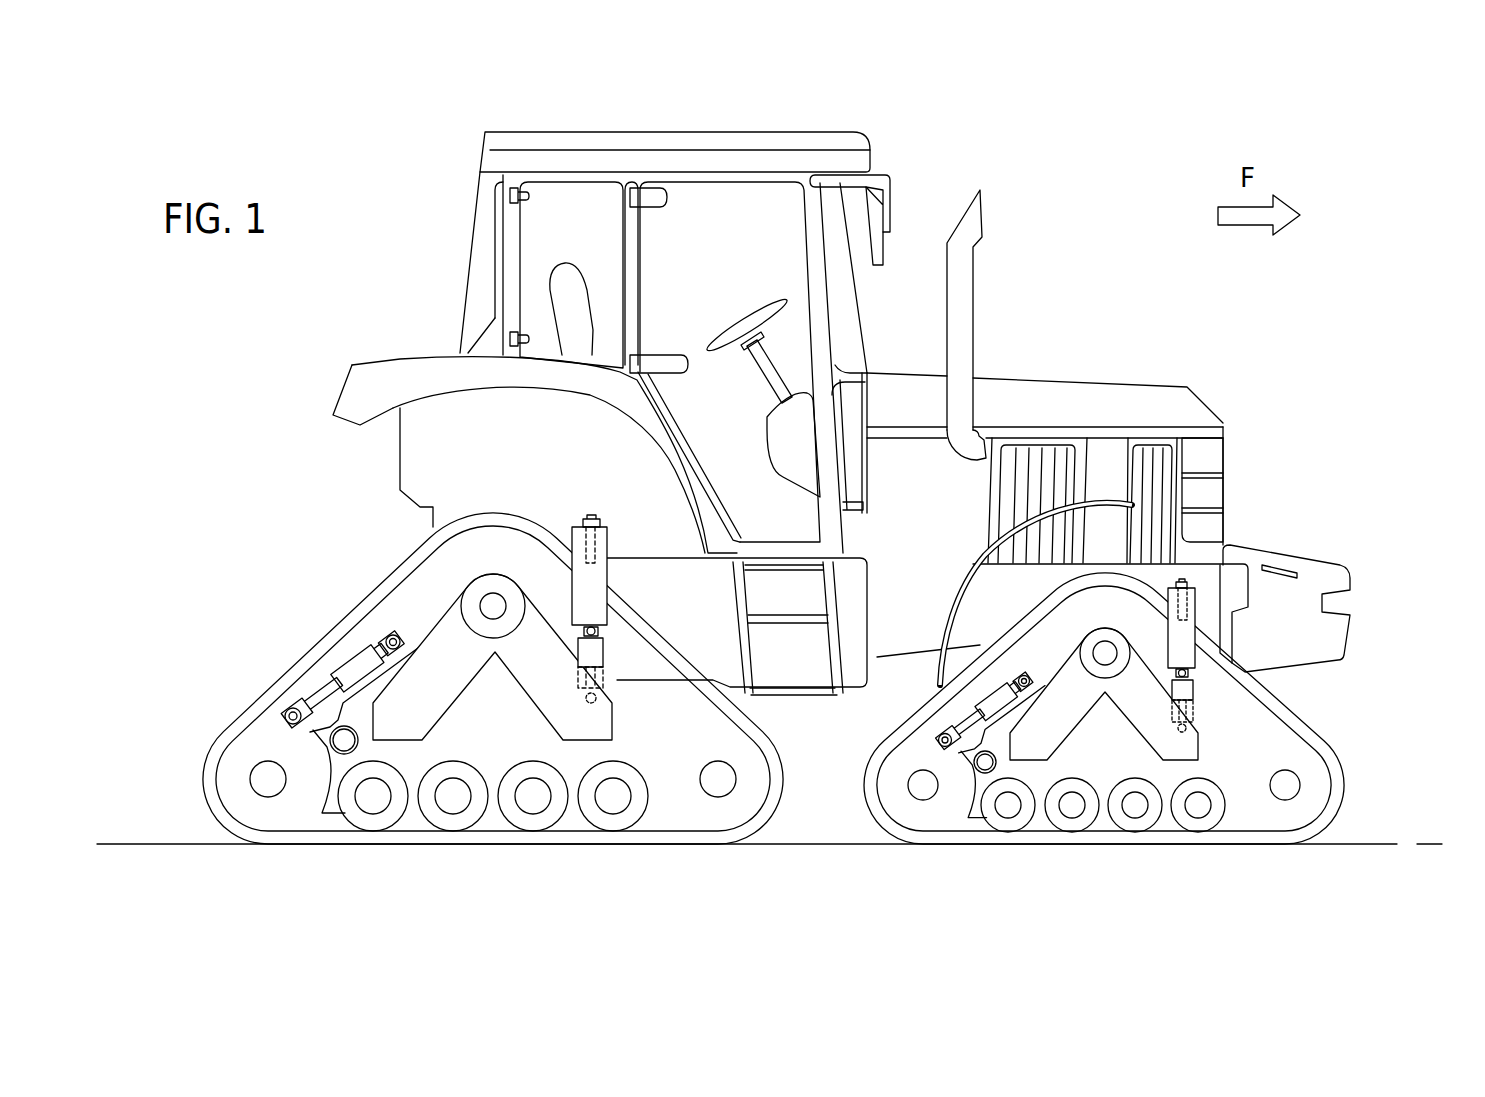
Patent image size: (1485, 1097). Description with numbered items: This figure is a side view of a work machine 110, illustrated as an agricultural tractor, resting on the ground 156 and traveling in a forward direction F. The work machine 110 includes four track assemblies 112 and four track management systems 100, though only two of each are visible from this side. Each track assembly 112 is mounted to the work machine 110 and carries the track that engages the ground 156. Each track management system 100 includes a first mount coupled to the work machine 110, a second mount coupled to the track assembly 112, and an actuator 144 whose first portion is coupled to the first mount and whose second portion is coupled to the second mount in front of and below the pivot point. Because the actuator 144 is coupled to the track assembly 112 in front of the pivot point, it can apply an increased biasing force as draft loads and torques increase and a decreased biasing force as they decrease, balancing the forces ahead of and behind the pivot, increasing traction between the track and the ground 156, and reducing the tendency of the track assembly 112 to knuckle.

The work machine 110 is at (1007, 110).
The track assembly 112 is at (250, 593).
The track management system 100 is at (628, 533).
The actuator 144 is at (613, 657).
The ground 156 is at (1365, 844).